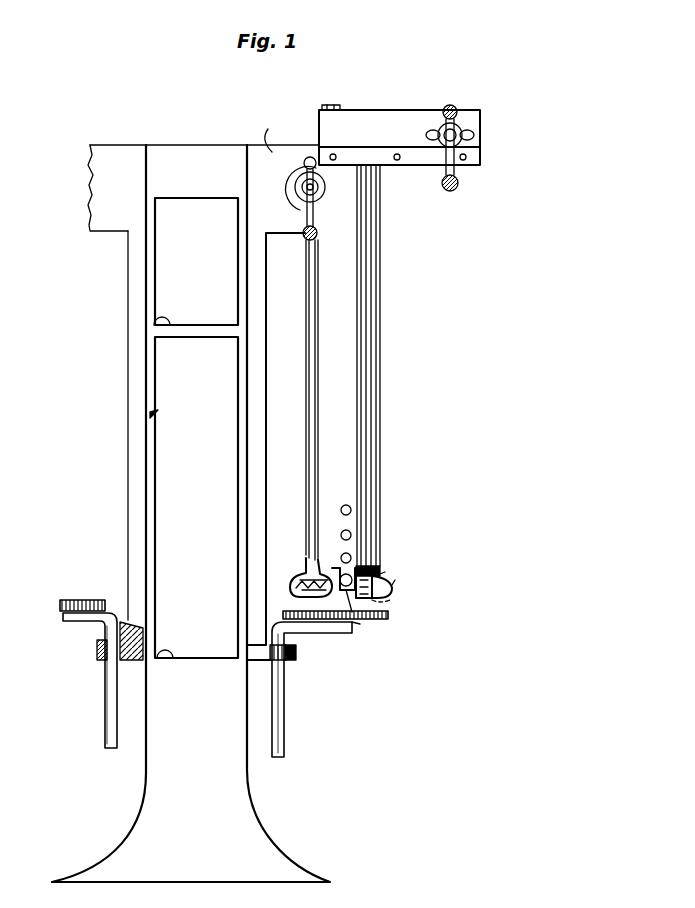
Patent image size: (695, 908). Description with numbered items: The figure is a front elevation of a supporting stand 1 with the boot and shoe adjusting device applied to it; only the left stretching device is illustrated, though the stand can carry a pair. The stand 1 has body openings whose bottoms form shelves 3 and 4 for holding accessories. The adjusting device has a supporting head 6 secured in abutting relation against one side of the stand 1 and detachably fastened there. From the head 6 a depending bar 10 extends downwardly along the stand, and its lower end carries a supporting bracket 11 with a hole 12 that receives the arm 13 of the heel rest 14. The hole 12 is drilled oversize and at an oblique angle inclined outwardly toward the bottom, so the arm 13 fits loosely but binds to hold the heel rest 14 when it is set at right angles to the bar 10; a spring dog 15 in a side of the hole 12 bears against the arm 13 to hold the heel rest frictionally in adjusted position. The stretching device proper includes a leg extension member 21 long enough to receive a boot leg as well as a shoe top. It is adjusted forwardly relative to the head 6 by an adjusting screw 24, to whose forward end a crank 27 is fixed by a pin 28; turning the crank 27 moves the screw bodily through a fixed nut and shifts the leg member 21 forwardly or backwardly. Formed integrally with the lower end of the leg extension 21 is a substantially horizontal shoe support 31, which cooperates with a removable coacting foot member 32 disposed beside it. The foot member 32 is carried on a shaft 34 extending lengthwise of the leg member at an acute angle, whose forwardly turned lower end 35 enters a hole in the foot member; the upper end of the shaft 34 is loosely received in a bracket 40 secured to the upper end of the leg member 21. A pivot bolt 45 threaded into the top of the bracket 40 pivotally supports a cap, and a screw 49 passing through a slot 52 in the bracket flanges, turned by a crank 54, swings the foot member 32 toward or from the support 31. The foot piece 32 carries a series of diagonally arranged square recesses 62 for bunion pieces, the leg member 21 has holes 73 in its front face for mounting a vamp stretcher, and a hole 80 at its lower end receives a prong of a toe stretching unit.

The supporting stand 1 is at (252, 818).
The shelf 3 is at (156, 660).
The shelf 4 is at (115, 187).
The supporting head 6 is at (272, 138).
The depending bar 10 is at (264, 410).
The supporting bracket 11 is at (288, 664).
The hole 12 is at (98, 661).
The arm 13 is at (106, 726).
The heel rest 14 is at (60, 604).
The spring dog 15 is at (296, 650).
The leg extension member 21 is at (358, 348).
The adjusting screw 24 is at (306, 186).
The crank 27 is at (305, 238).
The pin 28 is at (323, 184).
The shoe support 31 is at (300, 574).
The foot member 32 is at (374, 576).
The shaft 34 is at (376, 574).
The forwardly turned lower end 35 is at (382, 600).
The bracket 40 is at (481, 146).
The pivot bolt 45 is at (327, 106).
The screw 49 is at (454, 131).
The slot 52 is at (472, 136).
The crank 54 is at (458, 180).
The recesses 62 is at (395, 582).
The holes 73 is at (351, 509).
The hole 80 is at (356, 621).